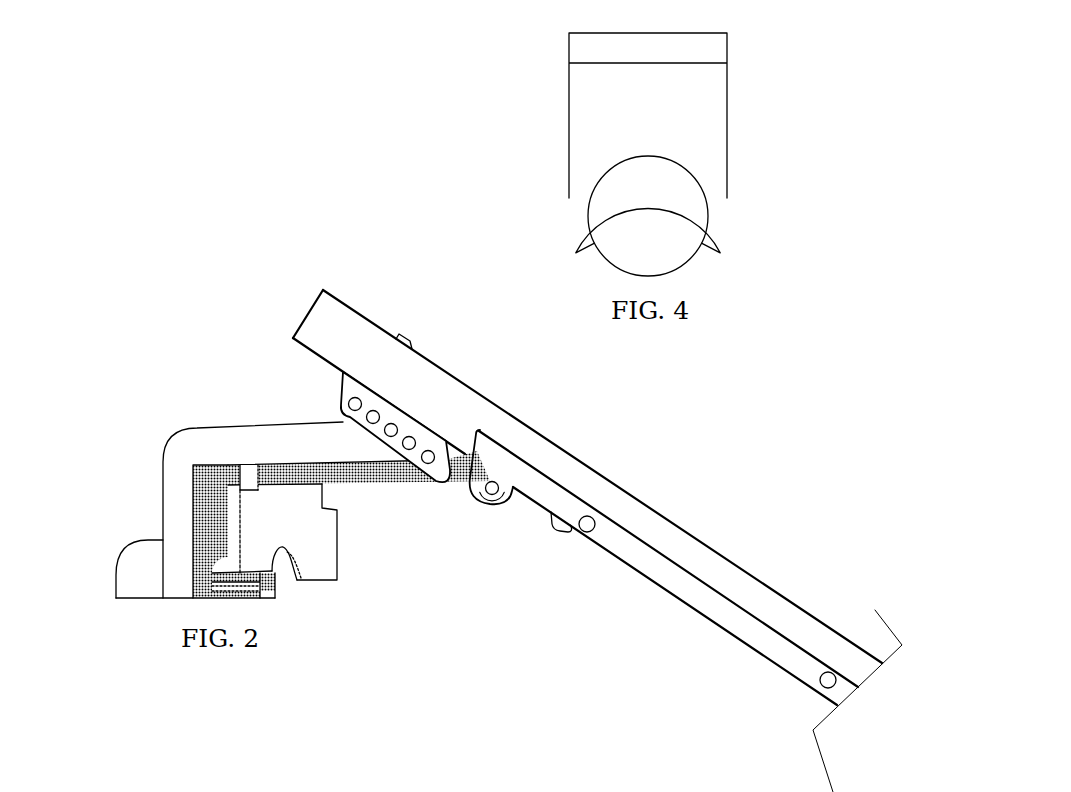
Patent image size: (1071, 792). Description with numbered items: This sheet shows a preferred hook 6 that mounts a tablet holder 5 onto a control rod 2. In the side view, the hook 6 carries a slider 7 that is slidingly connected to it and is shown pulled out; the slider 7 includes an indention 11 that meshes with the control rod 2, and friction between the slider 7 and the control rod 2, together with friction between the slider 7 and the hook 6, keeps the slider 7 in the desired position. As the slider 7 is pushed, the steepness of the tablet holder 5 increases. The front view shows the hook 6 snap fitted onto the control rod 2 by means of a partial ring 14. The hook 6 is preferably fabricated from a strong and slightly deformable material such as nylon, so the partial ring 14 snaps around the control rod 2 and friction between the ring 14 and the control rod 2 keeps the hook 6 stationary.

In FIG. 4, the control rod 2 is at (658, 240).
In FIG. 2, the tablet holder 5 is at (703, 641).
In FIG. 2, the hook 6 is at (205, 409).
In FIG. 4, the hook 6 is at (739, 97).
In FIG. 2, the slider 7 is at (317, 545).
In FIG. 2, the indention 11 is at (294, 579).
In FIG. 2, the partial ring 14 is at (132, 580).
In FIG. 4, the partial ring 14 is at (728, 215).